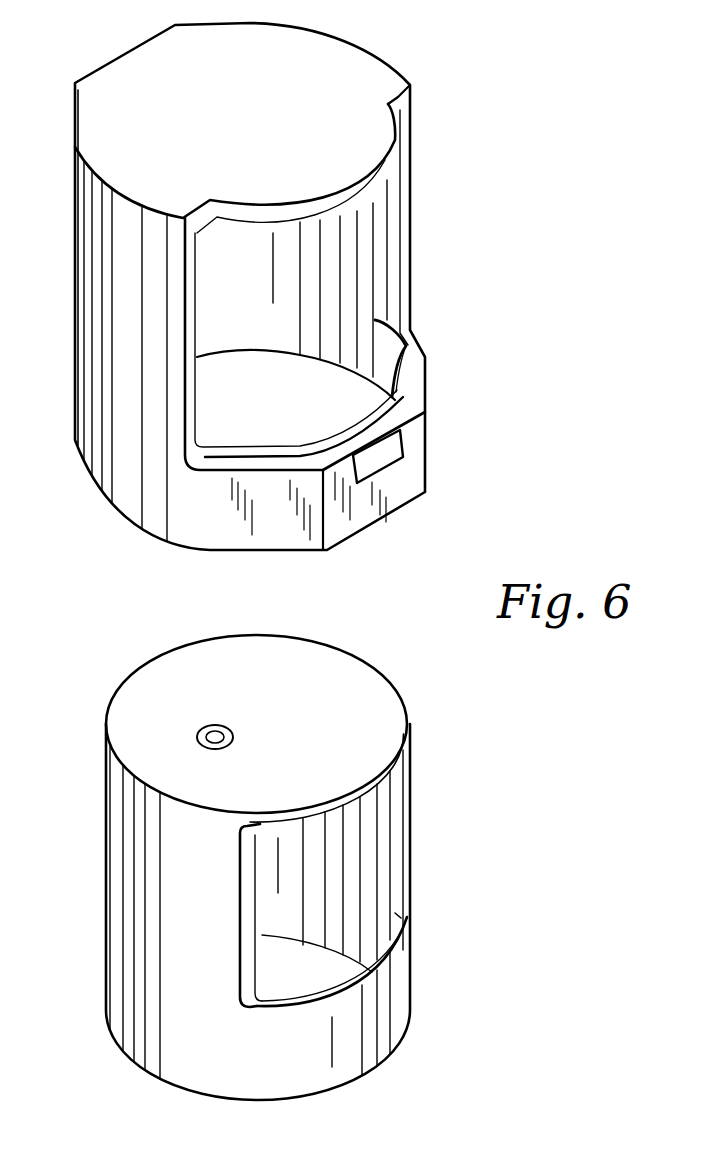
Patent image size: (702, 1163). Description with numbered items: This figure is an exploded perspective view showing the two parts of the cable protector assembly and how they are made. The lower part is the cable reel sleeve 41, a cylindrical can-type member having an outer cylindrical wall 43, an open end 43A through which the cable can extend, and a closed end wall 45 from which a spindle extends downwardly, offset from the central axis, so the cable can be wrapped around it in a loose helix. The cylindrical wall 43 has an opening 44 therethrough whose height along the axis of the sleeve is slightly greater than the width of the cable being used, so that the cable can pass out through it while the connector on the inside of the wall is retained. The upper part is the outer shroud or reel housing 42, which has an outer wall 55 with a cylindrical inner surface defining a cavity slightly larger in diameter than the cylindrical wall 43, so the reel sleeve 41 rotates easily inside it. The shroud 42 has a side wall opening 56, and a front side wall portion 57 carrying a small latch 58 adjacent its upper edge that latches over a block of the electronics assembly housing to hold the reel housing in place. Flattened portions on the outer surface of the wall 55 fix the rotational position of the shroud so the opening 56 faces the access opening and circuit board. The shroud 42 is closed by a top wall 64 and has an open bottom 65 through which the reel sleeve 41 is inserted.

The cable reel sleeve 41 is at (407, 737).
The outer shroud or reel housing 42 is at (381, 43).
The outer cylindrical wall 43 is at (187, 1062).
The open end 43A is at (307, 973).
The opening 44 is at (383, 873).
The closed end wall 45 is at (323, 680).
The outer wall 55 is at (157, 497).
The side wall opening 56 is at (385, 372).
The front side wall portion 57 is at (343, 527).
The latch 58 is at (377, 463).
The top wall 64 is at (345, 140).
The open bottom 65 is at (232, 432).